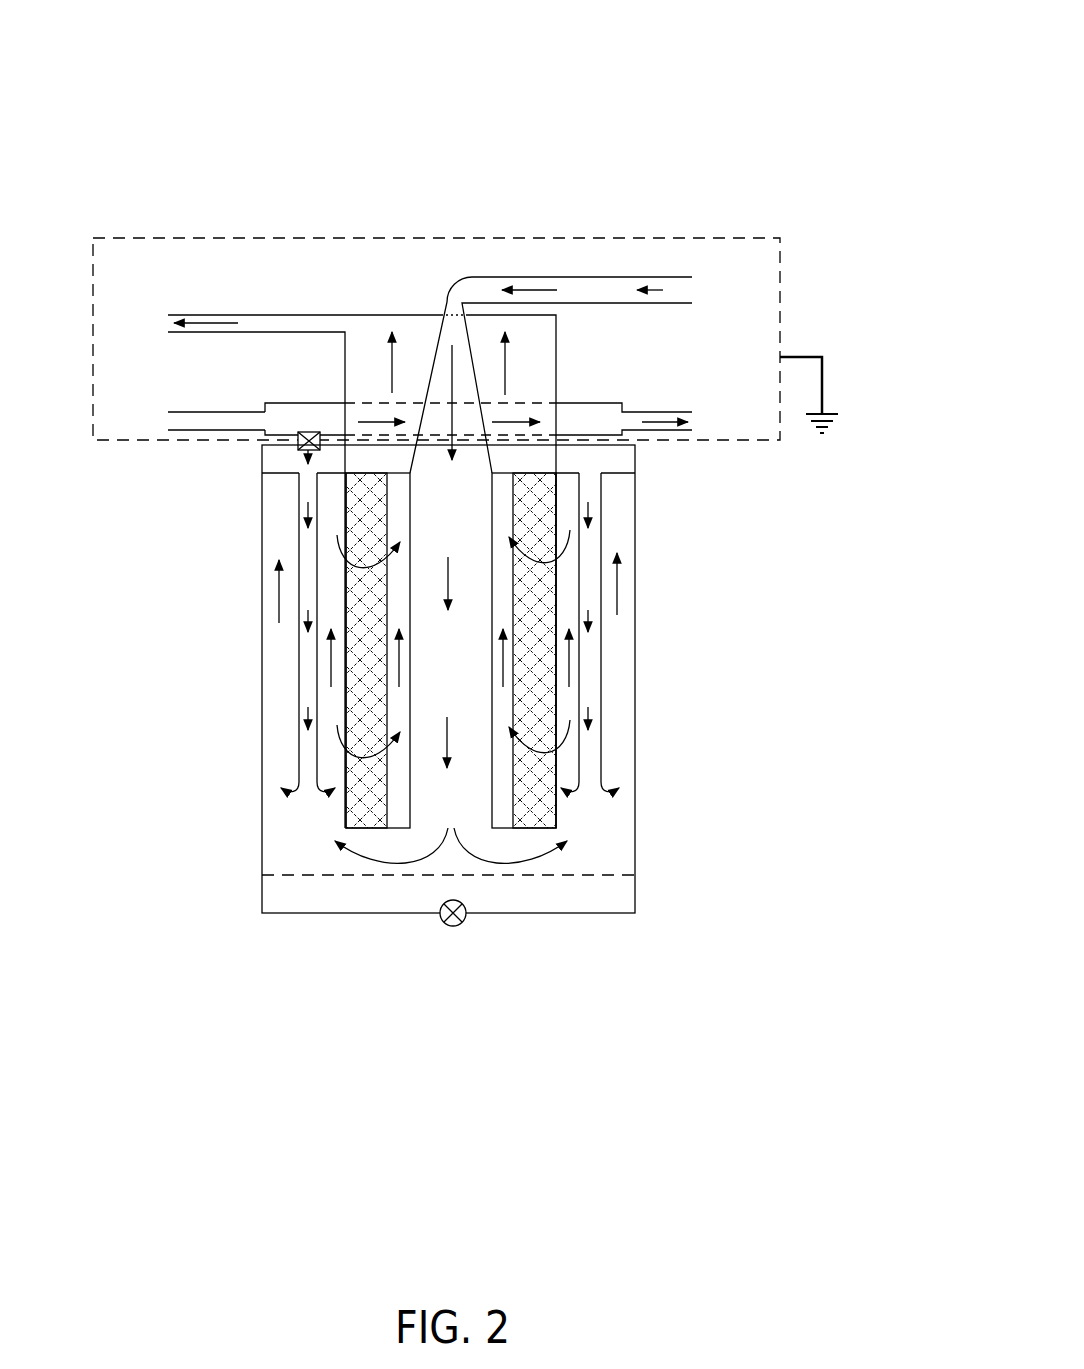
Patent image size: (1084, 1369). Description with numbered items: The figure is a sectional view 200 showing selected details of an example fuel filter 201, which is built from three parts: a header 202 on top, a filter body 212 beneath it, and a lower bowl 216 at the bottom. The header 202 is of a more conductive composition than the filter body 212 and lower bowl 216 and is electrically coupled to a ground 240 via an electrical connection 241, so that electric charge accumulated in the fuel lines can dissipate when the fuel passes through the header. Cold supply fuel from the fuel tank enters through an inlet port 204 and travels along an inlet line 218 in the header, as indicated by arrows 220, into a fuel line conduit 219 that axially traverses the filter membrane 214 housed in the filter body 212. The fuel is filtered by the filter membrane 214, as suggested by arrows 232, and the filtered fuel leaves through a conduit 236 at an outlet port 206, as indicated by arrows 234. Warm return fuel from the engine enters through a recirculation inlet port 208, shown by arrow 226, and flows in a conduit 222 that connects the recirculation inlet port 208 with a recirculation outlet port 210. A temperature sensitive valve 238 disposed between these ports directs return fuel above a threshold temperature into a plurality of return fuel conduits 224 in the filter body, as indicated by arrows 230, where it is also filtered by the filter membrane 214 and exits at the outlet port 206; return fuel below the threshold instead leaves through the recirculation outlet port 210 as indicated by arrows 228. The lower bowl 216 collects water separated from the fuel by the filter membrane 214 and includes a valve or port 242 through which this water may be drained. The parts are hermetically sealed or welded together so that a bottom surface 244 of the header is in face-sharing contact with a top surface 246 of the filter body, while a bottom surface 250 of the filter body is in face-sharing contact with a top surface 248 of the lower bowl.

The sectional view 200 is at (756, 44).
The fuel filter 201 is at (227, 174).
The header 202 is at (782, 324).
The inlet port 204 is at (703, 289).
The outlet port 206 is at (160, 327).
The recirculation inlet port 208 is at (157, 423).
The recirculation outlet port 210 is at (702, 418).
The filter body 212 is at (636, 670).
The filter membrane 214 is at (386, 626).
The lower bowl 216 is at (636, 893).
The inlet line 218 is at (570, 277).
The fuel line conduit 219 is at (492, 548).
The arrows 220 is at (665, 290).
The conduit 222 is at (278, 403).
The return fuel conduits 224 is at (298, 745).
The arrow 226 is at (170, 412).
The arrows 228 is at (505, 422).
The arrows 230 is at (305, 522).
The arrows 232 is at (453, 635).
The arrows 234 is at (190, 323).
The conduit 236 is at (286, 315).
The temperature sensitive valve 238 is at (300, 432).
The ground 240 is at (838, 414).
The electrical connection 241 is at (824, 357).
The valve and/or port 242 is at (453, 926).
The bottom surface of the header 244 is at (648, 450).
The top surface of the filter body 246 is at (253, 443).
The top surface of the lower bowl 248 is at (540, 884).
The bottom surface of the filter body 250 is at (278, 860).